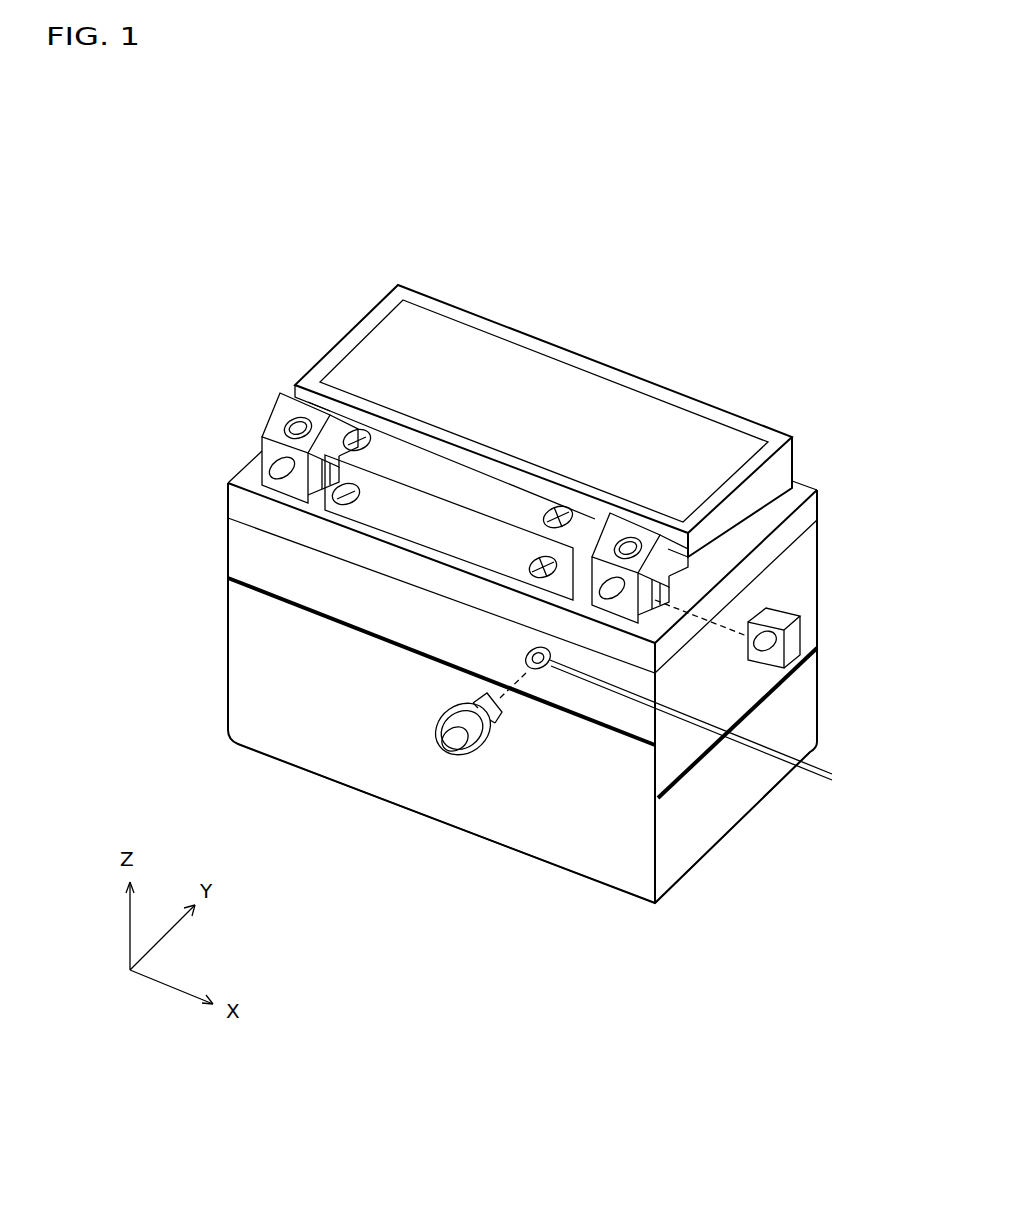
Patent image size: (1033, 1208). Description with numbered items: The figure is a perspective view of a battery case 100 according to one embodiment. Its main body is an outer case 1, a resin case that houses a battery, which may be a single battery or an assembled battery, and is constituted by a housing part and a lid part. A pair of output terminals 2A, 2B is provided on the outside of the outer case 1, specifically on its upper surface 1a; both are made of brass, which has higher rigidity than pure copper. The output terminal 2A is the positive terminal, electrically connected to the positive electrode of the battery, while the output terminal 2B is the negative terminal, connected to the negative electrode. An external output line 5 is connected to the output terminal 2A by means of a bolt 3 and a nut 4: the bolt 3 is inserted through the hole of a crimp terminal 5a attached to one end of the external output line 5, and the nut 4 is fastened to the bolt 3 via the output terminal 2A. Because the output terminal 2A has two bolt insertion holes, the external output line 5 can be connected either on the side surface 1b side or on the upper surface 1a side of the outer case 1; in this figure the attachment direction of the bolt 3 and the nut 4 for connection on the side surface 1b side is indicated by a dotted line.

The battery case 100 is at (608, 303).
The outer case 1 is at (812, 570).
The upper surface 1a is at (250, 478).
The side surface 1b is at (244, 613).
The output terminal 2A is at (590, 571).
The output terminal 2B is at (282, 406).
The bolt 3 is at (455, 743).
The nut 4 is at (801, 641).
The external output line 5 is at (797, 742).
The crimp terminal 5a is at (536, 672).